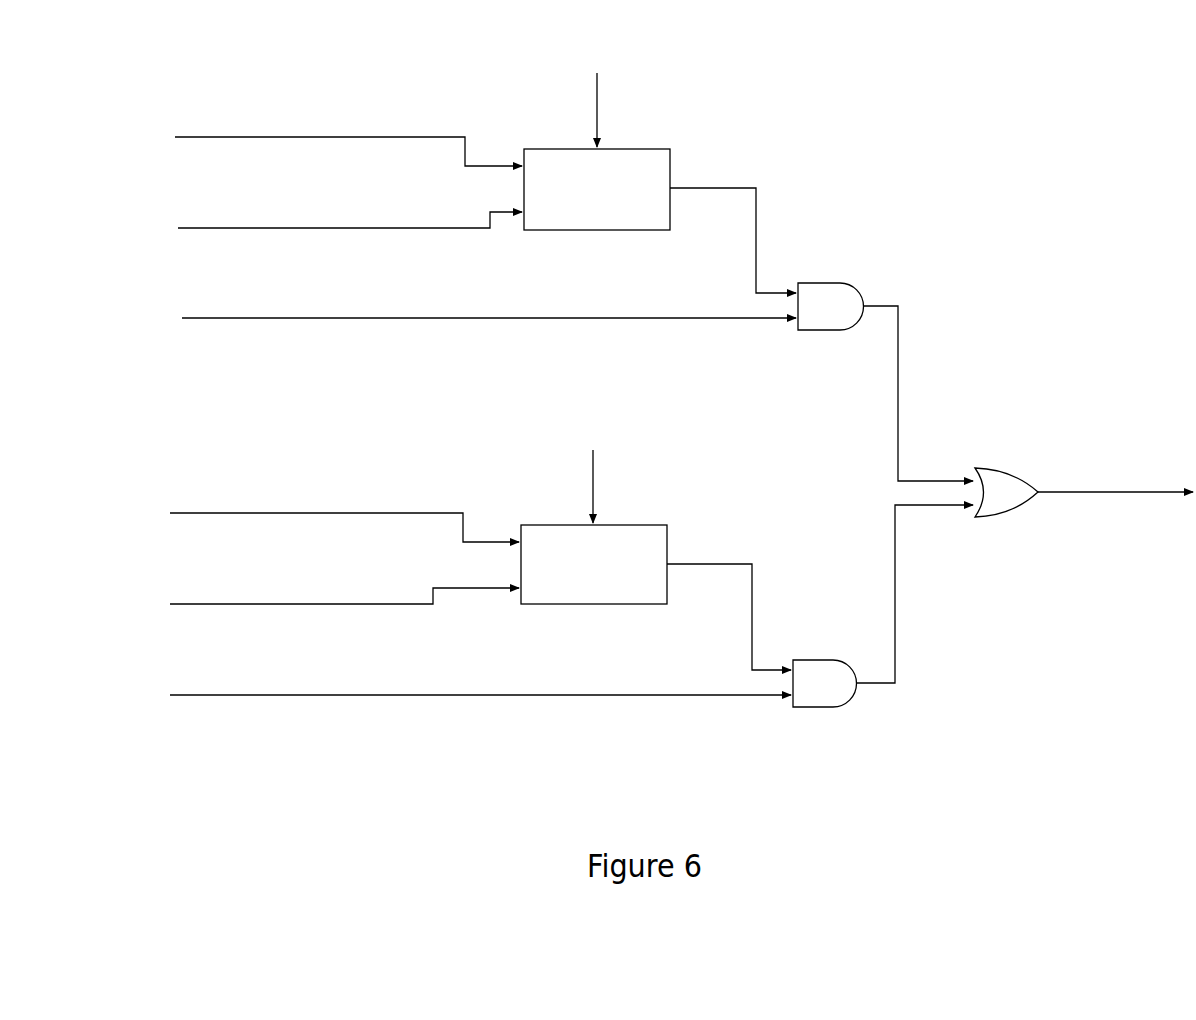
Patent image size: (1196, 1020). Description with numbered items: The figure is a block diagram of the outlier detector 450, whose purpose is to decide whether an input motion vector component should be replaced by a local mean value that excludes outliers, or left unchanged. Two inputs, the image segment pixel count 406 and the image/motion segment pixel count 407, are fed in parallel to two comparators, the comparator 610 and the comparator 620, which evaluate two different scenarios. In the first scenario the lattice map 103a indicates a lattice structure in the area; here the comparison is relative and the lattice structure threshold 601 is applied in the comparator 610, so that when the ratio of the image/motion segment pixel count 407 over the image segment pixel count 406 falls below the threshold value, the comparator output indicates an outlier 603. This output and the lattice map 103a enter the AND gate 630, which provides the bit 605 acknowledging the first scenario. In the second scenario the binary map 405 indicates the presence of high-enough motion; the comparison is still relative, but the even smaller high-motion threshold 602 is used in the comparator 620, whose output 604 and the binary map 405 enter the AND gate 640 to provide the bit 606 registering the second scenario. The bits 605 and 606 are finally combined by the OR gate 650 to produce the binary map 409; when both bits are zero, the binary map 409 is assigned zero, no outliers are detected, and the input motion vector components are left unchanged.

The outlier detector 450 is at (240, 63).
The image segment pixel count 406 is at (233, 137).
The image/motion segment pixel count 407 is at (242, 228).
The lattice map 103a is at (228, 318).
The binary map 405 is at (198, 695).
The lattice structure threshold 601 is at (635, 110).
The high-motion threshold 602 is at (629, 486).
The outlier 603 is at (727, 188).
The comparator output 604 is at (716, 564).
The bit 605 is at (898, 300).
The bit 606 is at (895, 705).
The comparator 610 is at (579, 221).
The comparator 620 is at (576, 597).
The AND gate 630 is at (807, 316).
The AND gate 640 is at (804, 693).
The OR gate 650 is at (988, 502).
The binary map 409 is at (1103, 493).